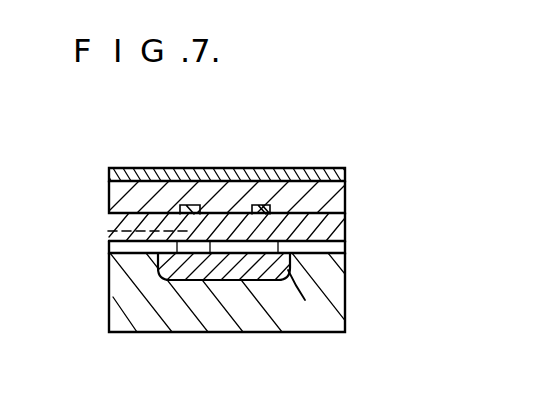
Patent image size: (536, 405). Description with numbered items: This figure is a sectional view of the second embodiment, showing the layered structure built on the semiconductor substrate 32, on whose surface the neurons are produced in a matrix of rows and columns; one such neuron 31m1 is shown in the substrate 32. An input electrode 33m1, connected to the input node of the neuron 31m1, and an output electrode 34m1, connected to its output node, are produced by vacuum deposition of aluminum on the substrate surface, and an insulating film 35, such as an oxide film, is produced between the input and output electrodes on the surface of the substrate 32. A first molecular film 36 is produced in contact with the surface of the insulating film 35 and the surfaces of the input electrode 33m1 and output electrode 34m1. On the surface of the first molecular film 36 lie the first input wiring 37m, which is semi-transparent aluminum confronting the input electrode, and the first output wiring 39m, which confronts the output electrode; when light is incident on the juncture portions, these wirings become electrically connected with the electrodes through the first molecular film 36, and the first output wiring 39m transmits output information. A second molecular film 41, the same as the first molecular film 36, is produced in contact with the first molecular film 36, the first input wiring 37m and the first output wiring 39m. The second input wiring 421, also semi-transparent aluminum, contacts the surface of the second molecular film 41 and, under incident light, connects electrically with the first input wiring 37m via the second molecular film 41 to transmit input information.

The first input wiring 37m is at (311, 168).
The second input wiring 421 is at (283, 169).
The second molecular film 41 is at (339, 193).
The first output wiring 39m is at (197, 204).
The first molecular film 36 is at (339, 228).
The output electrode 34m1 is at (107, 231).
The insulating film 35 is at (108, 256).
The semiconductor substrate 32 is at (326, 286).
The input electrode 33m1 is at (255, 243).
The neuron 31m1 is at (288, 272).